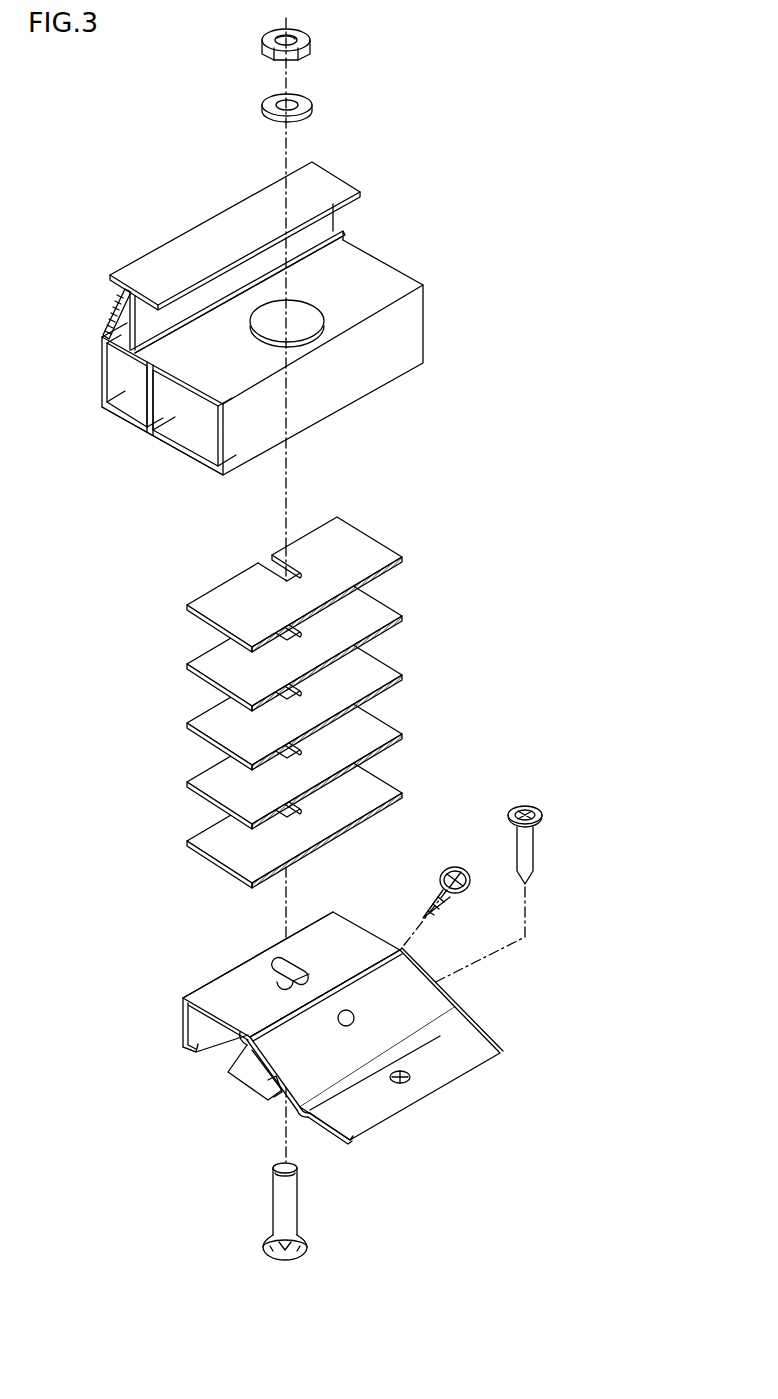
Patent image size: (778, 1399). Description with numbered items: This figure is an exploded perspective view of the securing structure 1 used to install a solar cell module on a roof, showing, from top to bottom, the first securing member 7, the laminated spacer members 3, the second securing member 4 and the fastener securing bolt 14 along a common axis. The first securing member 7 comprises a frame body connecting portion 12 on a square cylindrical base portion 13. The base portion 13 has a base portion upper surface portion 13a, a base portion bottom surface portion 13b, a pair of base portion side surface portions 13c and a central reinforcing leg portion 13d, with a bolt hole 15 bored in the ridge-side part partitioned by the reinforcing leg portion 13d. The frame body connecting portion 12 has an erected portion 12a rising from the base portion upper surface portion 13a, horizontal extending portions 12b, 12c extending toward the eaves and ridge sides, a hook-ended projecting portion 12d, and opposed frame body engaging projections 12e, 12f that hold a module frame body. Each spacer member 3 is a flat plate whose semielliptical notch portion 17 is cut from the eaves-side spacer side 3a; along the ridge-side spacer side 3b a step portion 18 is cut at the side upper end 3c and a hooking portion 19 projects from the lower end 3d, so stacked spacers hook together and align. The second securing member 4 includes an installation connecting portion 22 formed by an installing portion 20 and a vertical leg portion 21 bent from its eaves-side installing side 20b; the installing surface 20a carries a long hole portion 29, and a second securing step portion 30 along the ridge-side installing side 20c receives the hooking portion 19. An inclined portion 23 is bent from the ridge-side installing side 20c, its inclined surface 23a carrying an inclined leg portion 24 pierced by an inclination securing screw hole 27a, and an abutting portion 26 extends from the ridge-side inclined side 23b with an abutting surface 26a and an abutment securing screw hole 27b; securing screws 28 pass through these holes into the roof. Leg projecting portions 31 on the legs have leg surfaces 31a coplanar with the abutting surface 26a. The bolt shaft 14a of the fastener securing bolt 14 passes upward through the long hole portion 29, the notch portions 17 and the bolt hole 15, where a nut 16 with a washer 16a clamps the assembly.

The securing structure 1 is at (367, 656).
The spacer member 3 is at (391, 702).
The eaves-side spacer side 3a is at (329, 702).
The ridge-side spacer side 3b is at (347, 702).
The side upper end 3c is at (347, 702).
The lower end 3d is at (404, 555).
The second securing member 4 is at (491, 938).
The first securing member 7 is at (269, 270).
The frame body connecting portion 12 is at (227, 255).
The erected portion 12a is at (229, 304).
The horizontal extending portion 12b is at (168, 250).
The horizontal extending portion 12c is at (357, 195).
The projecting portion 12d is at (108, 298).
The frame body engaging projection 12e is at (137, 306).
The frame body engaging projection 12f is at (160, 337).
The base portion 13 is at (258, 375).
The base portion upper surface portion 13a is at (366, 290).
The base portion bottom surface portion 13b is at (161, 444).
The base portion side surface portion 13c is at (424, 344).
The reinforcing leg portion 13d is at (146, 408).
The fastener securing bolt 14 is at (296, 1229).
The bolt shaft 14a is at (294, 1203).
The bolt hole 15 is at (318, 325).
The nut 16 is at (311, 40).
The washer 16a is at (311, 103).
The notch portion 17 is at (347, 702).
The step portion 18 is at (347, 702).
The hooking portion 19 is at (347, 702).
The installing portion 20 is at (360, 1013).
The installing surface 20a is at (336, 910).
The eaves-side installing side 20b is at (240, 962).
The ridge-side installing side 20c is at (287, 1020).
The vertical leg portion 21 is at (182, 1013).
The installation connecting portion 22 is at (354, 1013).
The inclined portion 23 is at (417, 1062).
The inclined surface 23a is at (453, 1010).
The ridge-side inclined side 23b is at (482, 1062).
The inclined leg portion 24 is at (249, 1036).
The abutting portion 26 is at (442, 1038).
The abutting surface 26a is at (345, 1141).
The inclination securing screw hole 27a is at (353, 1011).
The abutment securing screw hole 27b is at (404, 1086).
The securing screw 28 is at (448, 896).
The long hole portion 29 is at (302, 966).
The second securing step portion 30 is at (281, 1036).
The leg projecting portion 31 is at (185, 1048).
The leg surface 31a is at (191, 1056).